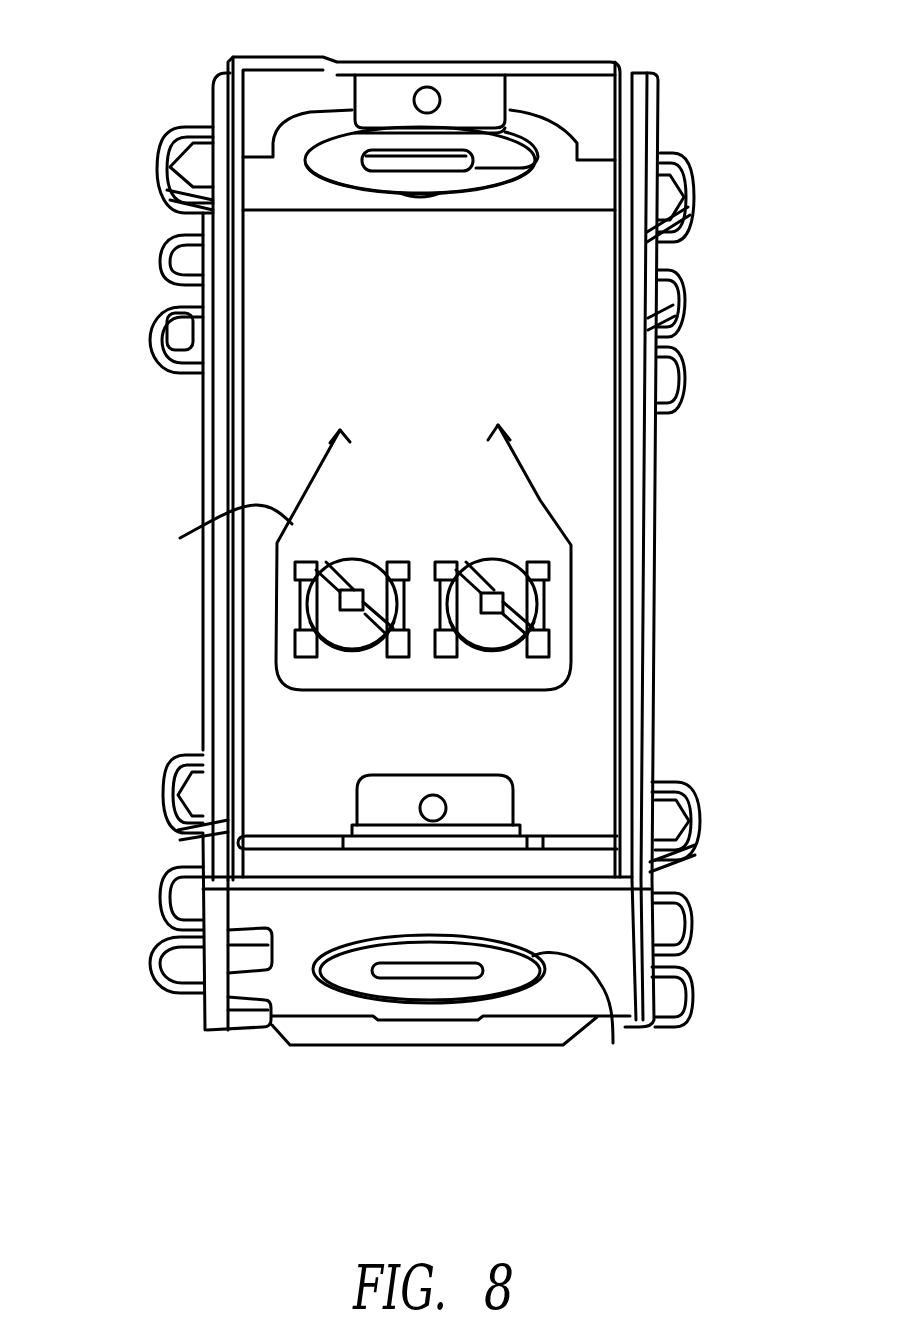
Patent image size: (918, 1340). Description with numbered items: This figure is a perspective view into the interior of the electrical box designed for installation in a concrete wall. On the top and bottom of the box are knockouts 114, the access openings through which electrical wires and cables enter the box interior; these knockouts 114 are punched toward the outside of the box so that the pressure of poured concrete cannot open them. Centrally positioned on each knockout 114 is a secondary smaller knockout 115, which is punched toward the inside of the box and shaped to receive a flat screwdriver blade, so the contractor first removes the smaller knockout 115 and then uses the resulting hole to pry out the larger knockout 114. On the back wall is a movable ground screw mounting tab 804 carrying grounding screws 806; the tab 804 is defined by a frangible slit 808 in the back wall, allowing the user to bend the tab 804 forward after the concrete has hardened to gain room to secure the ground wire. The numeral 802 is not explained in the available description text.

The mounting tab with boss 802 is at (500, 132).
The movable ground screw mounting tab 804 is at (480, 500).
The grounding screws 806 is at (495, 600).
The frangible slit 808 is at (330, 443).
The knockouts 114 is at (520, 970).
The secondary smaller knockouts 115 is at (443, 978).